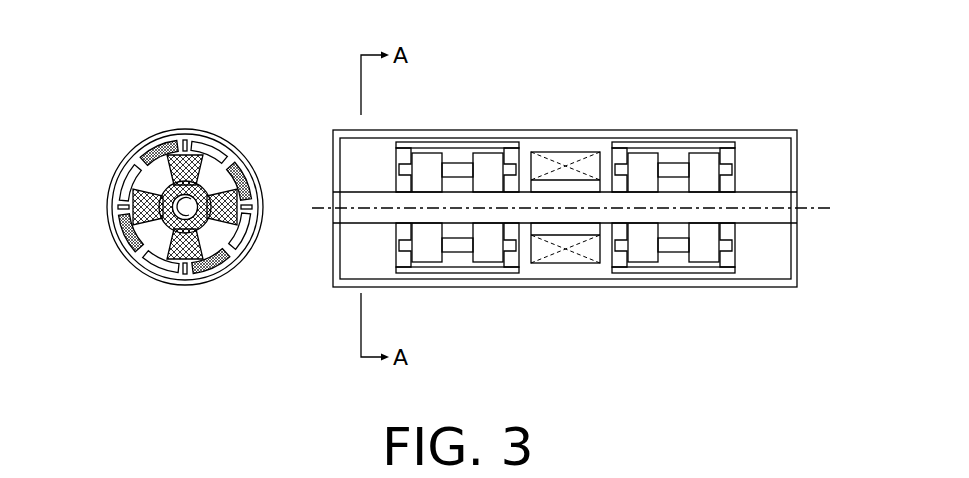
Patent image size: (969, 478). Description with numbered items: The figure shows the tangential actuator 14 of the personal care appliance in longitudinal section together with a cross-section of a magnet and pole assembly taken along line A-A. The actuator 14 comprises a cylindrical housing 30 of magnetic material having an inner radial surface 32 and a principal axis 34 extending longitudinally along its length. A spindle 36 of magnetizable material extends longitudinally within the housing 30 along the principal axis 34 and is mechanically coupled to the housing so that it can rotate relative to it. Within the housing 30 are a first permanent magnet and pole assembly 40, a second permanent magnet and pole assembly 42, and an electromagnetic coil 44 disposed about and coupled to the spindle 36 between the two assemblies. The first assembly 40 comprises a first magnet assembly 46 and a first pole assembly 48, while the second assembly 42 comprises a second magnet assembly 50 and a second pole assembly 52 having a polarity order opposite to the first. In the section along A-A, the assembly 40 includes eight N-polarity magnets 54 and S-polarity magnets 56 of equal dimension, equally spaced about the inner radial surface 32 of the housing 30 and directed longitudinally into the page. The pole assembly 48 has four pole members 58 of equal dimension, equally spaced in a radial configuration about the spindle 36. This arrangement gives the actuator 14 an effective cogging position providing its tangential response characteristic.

The tangential actuator 14 is at (752, 302).
The cylindrical housing 30 is at (128, 152).
The inner radial surface 32 is at (592, 266).
The principal axis 34 is at (823, 210).
The spindle 36 is at (790, 200).
The first permanent magnet and pole assembly 40 is at (98, 93).
The second permanent magnet and pole assembly 42 is at (675, 108).
The electromagnetic coil 44 is at (566, 150).
The first magnet assembly 46 is at (122, 267).
The first pole assembly 48 is at (212, 178).
The second magnet assembly 50 is at (727, 145).
The second pole assembly 52 is at (643, 150).
The N-polarity magnet 54 is at (208, 148).
The S-polarity magnet 56 is at (162, 148).
The pole member 58 is at (183, 140).